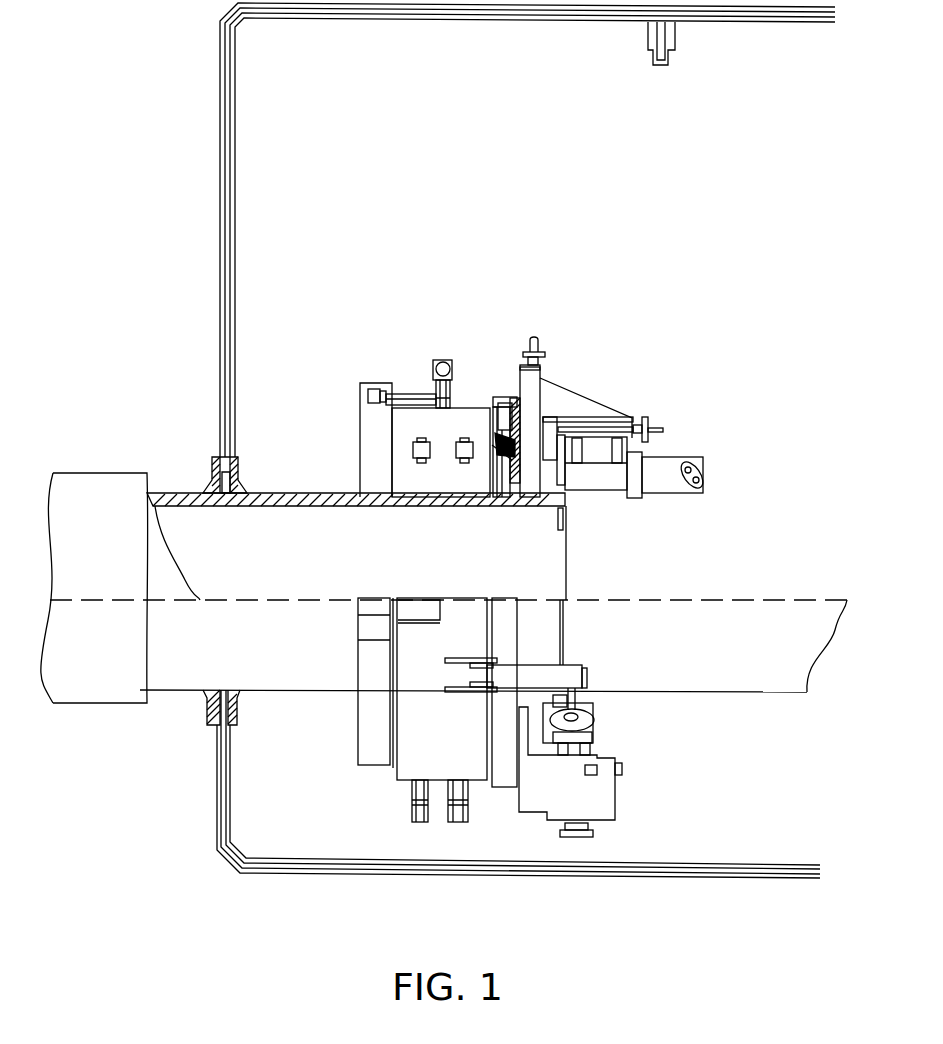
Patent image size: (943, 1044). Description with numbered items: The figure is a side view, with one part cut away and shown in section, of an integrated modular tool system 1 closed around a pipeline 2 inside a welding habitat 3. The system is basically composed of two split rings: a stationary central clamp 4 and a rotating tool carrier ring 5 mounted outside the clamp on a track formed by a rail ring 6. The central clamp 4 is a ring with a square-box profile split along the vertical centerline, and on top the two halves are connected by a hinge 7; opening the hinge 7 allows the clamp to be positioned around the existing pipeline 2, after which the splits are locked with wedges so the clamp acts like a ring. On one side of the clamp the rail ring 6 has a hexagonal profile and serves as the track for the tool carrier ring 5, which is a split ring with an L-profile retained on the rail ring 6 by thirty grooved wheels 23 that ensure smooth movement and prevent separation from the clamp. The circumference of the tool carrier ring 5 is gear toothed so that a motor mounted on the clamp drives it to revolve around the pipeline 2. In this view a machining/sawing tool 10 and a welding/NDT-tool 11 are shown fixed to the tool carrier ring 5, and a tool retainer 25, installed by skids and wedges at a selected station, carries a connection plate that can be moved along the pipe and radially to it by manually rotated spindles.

The integrated modular tool system 1 is at (377, 785).
The pipeline 2 is at (99, 495).
The welding habitat 3 is at (367, 18).
The central clamp 4 is at (468, 423).
The tool carrier ring 5 is at (507, 400).
The rail ring 6 is at (512, 460).
The hinge 7 is at (437, 360).
The machining/sawing tool 10 is at (650, 457).
The welding/NDT-tool 11 is at (603, 798).
The grooved wheels 23 is at (517, 410).
The tool retainer 25 is at (590, 407).